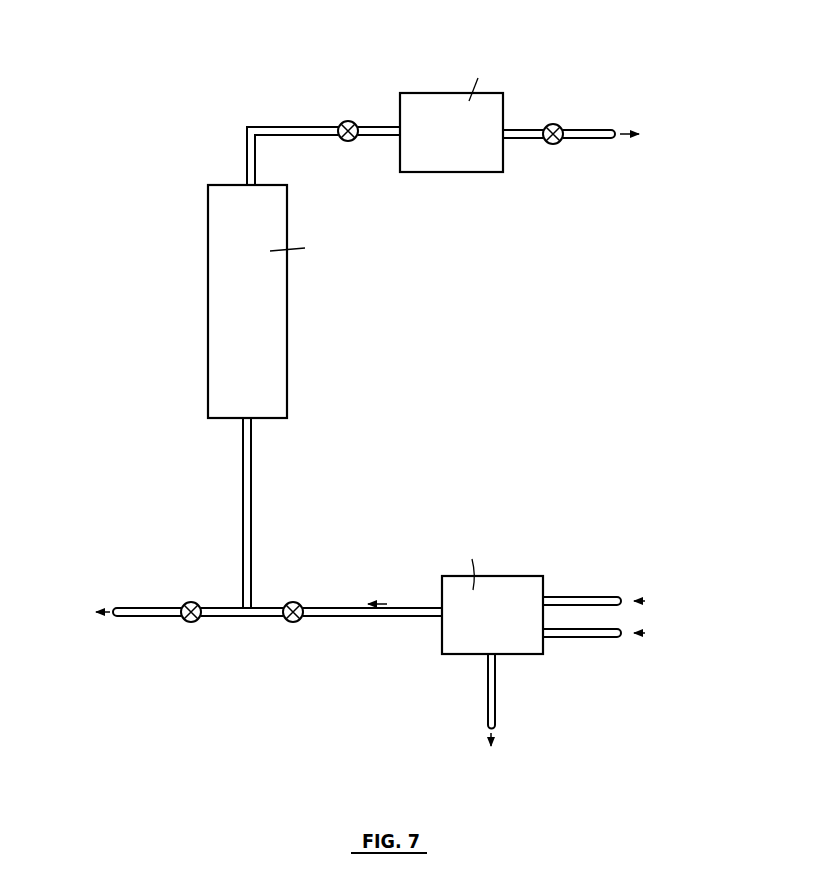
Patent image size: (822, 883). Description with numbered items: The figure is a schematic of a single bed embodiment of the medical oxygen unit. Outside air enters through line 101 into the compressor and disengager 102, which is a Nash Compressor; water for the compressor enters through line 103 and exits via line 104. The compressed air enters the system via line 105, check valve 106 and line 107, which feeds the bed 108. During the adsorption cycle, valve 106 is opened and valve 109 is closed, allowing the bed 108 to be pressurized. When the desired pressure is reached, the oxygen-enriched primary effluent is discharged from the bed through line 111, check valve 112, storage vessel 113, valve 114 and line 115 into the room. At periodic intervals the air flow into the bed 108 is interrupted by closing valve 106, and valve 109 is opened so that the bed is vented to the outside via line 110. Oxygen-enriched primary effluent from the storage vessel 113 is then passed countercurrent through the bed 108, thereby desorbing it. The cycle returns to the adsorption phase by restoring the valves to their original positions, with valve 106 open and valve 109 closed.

The line 101 is at (582, 597).
The compressor and disengager 102 is at (457, 637).
The line 103 is at (598, 637).
The line 104 is at (488, 704).
The line 105 is at (370, 618).
The check valve 106 is at (297, 601).
The line 107 is at (243, 527).
The bed 108 is at (227, 298).
The valve 109 is at (190, 601).
The line 110 is at (142, 606).
The line 111 is at (247, 140).
The check valve 112 is at (349, 122).
The storage vessel 113 is at (455, 163).
The valve 114 is at (556, 124).
The line 115 is at (592, 132).